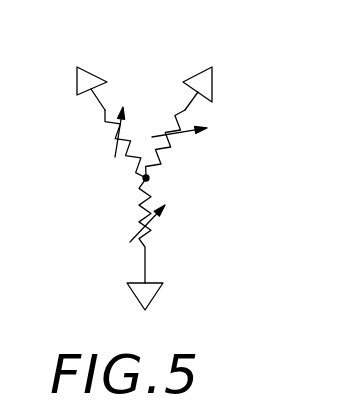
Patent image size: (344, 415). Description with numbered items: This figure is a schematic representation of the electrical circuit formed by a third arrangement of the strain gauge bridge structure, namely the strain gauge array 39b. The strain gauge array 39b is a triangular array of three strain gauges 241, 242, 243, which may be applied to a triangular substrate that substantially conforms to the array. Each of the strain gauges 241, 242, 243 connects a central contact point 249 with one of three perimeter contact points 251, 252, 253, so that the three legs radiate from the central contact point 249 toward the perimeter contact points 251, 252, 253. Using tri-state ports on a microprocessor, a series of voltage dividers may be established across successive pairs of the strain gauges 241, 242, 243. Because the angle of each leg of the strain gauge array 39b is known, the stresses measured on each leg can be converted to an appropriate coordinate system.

The strain gauge array 39b is at (88, 235).
The perimeter contact point 251 is at (90, 44).
The perimeter contact point 252 is at (212, 67).
The perimeter contact point 253 is at (147, 296).
The strain gauge 241 is at (105, 128).
The strain gauge 242 is at (186, 117).
The strain gauge 243 is at (147, 237).
The central contact point 249 is at (144, 179).